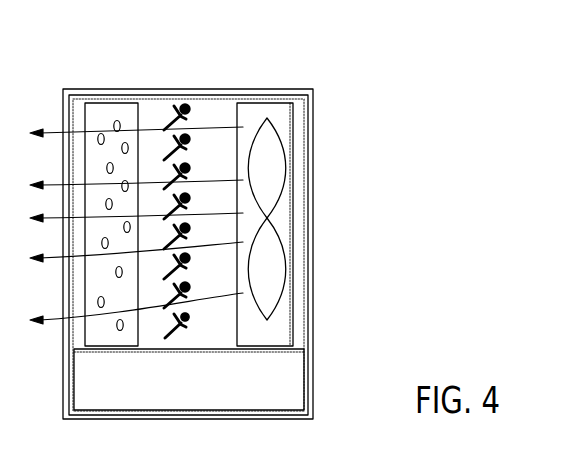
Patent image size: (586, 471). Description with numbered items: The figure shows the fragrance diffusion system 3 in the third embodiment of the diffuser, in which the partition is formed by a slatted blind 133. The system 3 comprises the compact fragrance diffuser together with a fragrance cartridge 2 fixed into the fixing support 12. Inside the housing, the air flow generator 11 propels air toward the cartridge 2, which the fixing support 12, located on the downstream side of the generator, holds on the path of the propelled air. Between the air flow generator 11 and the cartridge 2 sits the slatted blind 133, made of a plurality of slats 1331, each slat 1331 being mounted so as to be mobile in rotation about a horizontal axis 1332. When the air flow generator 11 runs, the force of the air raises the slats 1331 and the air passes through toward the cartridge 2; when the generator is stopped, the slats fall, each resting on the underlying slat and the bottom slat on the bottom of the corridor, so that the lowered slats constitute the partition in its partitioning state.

The fragrance cartridge 2 is at (99, 111).
The fragrance diffusion system 3 is at (380, 126).
The air flow generator 11 is at (285, 112).
The fixing support 12 is at (182, 410).
The slatted blind 133 is at (258, 237).
The slat 1331 is at (177, 338).
The horizontal axis 1332 is at (199, 320).